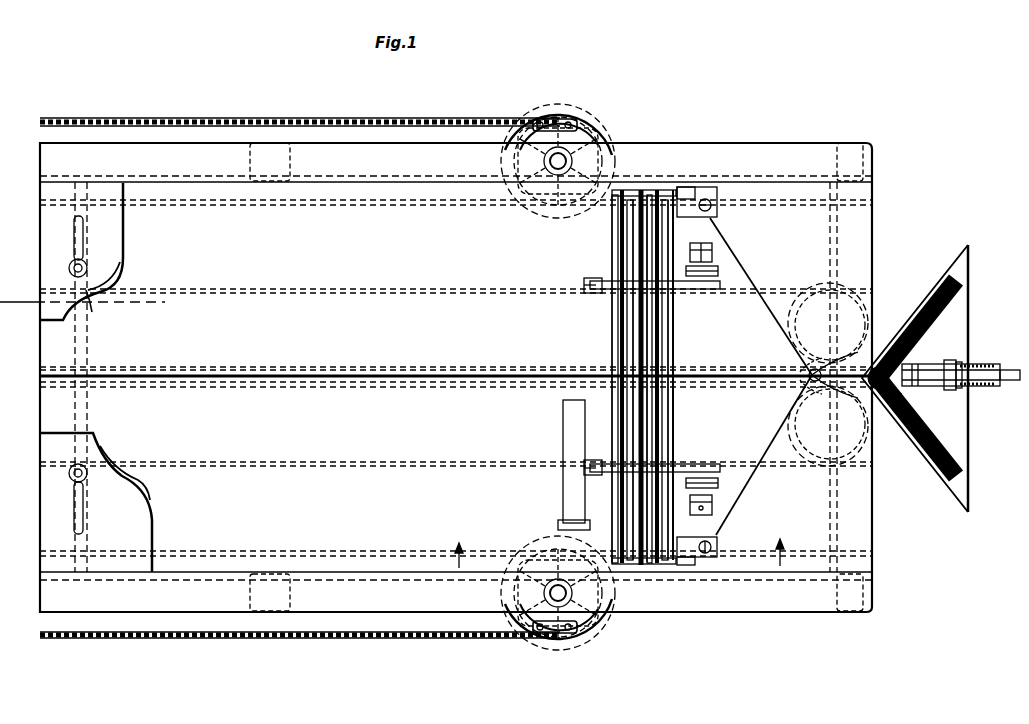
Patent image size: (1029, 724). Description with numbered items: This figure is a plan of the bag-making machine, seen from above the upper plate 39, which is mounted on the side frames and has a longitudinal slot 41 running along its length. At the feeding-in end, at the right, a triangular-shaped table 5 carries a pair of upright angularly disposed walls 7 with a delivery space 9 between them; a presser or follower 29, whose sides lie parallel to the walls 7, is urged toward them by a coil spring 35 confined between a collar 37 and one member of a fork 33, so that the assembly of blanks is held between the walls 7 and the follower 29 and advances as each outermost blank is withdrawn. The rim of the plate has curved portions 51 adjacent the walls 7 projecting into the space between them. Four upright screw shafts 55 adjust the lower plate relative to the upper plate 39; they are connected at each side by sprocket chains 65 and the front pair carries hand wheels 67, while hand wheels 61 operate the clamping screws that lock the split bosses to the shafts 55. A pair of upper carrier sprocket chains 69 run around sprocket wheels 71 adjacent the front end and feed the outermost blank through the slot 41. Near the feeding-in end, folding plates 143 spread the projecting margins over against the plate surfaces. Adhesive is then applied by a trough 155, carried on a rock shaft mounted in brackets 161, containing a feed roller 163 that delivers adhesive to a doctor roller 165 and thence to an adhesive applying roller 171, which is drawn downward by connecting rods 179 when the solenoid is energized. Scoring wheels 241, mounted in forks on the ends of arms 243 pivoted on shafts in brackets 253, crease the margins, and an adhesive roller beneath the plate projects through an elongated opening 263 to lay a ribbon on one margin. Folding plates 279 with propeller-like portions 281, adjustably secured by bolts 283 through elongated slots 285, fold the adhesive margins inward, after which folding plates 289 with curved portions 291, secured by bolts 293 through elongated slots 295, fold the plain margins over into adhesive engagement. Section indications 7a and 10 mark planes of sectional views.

The triangular-shaped table 5 is at (950, 286).
The upright angularly disposed walls 7 is at (912, 298).
The section line 7a is at (99, 298).
The delivery space 9 is at (862, 368).
The section line 10 is at (616, 557).
The presser or follower 29 is at (918, 336).
The fork 33 is at (960, 386).
The coil spring 35 is at (977, 391).
The collar 37 is at (968, 364).
The upper plate 39 is at (826, 238).
The longitudinal slot 41 is at (370, 376).
The curved portions 51 is at (850, 352).
The upright shafts 55 is at (566, 157).
The hand wheels 61 is at (545, 125).
The sprocket chains 65 is at (376, 118).
The hand wheels 67 is at (578, 114).
The sprocket chains 69 is at (335, 289).
The sprocket wheels 71 is at (790, 343).
The folding plates 143 is at (720, 270).
The trough 155 is at (648, 224).
The brackets 161 is at (668, 196).
The feed roller 163 is at (648, 408).
The doctor roller 165 is at (632, 332).
The adhesive applying roller 171 is at (614, 314).
The connecting rods 179 is at (705, 192).
The scoring wheels 241 is at (588, 284).
The arms 243 is at (602, 280).
The brackets 253 is at (714, 252).
The elongated opening 263 is at (562, 504).
The folding plates 279 is at (152, 524).
The portions 281 is at (128, 472).
The bolts 283 is at (86, 468).
The elongated slots 285 is at (80, 510).
The folding plates 289 is at (122, 240).
The portions 291 is at (112, 274).
The bolts 293 is at (106, 309).
The elongated slots 295 is at (84, 228).